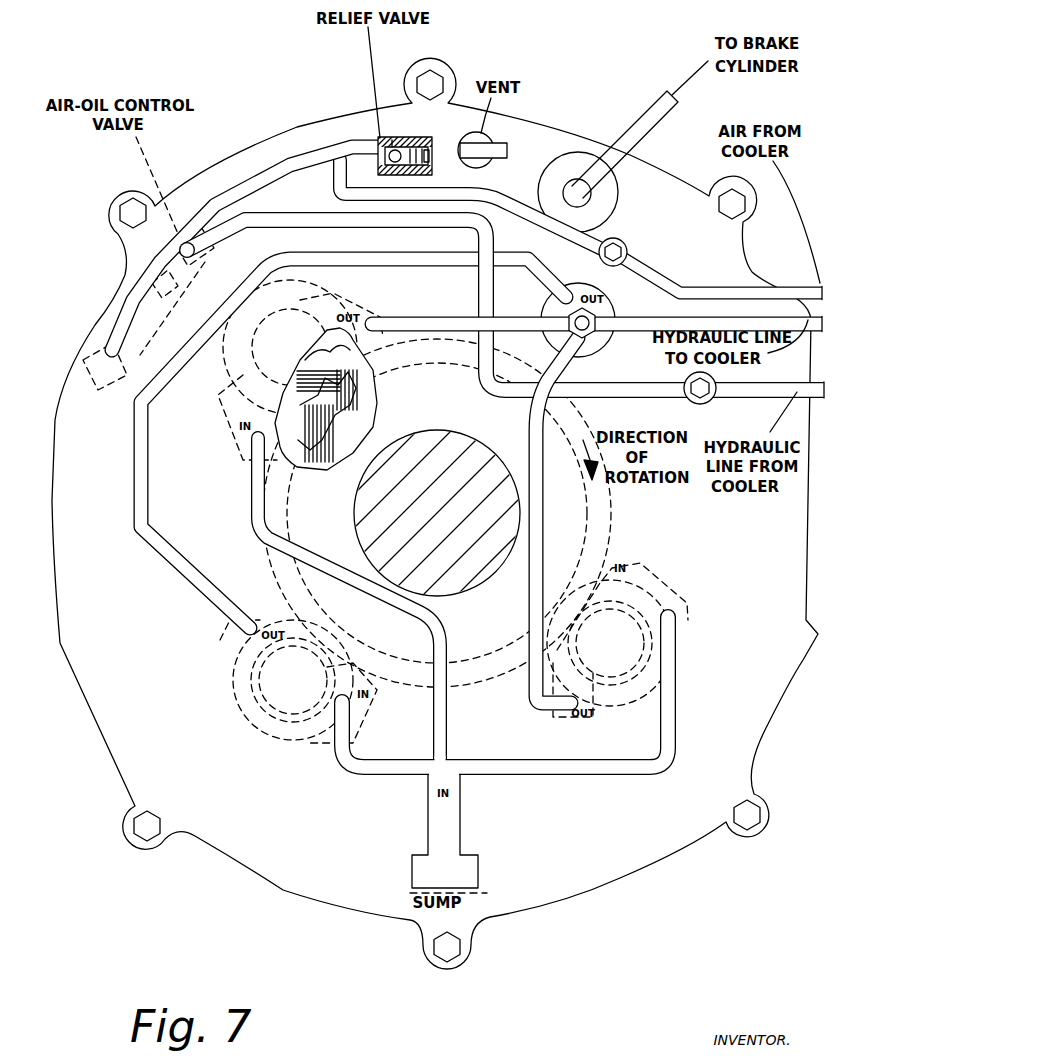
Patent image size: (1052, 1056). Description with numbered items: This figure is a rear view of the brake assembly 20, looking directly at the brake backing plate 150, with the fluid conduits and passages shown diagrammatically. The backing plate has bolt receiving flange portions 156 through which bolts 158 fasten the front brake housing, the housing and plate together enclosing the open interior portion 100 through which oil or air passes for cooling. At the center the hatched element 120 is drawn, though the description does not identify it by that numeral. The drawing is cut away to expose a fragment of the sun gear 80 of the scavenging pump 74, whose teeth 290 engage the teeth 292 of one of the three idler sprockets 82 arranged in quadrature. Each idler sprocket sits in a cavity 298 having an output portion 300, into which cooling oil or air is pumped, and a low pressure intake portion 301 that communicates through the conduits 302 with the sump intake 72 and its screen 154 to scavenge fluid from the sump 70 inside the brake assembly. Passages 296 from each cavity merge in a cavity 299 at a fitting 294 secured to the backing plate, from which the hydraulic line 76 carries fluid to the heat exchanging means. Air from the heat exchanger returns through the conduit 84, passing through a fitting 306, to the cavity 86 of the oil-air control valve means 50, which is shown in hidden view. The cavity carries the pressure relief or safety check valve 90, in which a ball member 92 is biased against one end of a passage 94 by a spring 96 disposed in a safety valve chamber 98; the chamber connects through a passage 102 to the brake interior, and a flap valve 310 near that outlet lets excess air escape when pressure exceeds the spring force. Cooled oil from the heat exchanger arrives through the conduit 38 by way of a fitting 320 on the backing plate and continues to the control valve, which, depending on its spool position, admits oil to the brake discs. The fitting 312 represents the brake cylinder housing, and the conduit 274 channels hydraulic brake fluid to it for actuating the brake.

The brake assembly 20 is at (280, 890).
The conduit 38 is at (601, 392).
The oil-air control valve means 50 is at (102, 352).
The sump 70 is at (493, 897).
The sump intake 72 is at (458, 870).
The pump 74 is at (322, 473).
The conduit 76 is at (650, 323).
The sun gear 80 is at (367, 423).
The idler sprockets 82 is at (303, 363).
The conduit 84 is at (522, 220).
The cavity 86 is at (226, 195).
The safety check valve 90 is at (382, 144).
The ball member 92 is at (381, 170).
The passage 94 is at (380, 150).
The spring 96 is at (425, 140).
The safety valve chamber 98 is at (392, 140).
The open interior portion 100 is at (565, 146).
The passage 102 is at (432, 162).
The shaft 120 is at (460, 460).
The brake backing plate 150 is at (650, 838).
The screen 154 is at (478, 884).
The bolt receiving flange portions 156 is at (108, 220).
The bolts 158 is at (128, 208).
The conduit 274 is at (640, 100).
The teeth 290 is at (340, 375).
The teeth 292 is at (368, 412).
The fitting 294 is at (598, 340).
The passages 296 is at (463, 323).
The cavity 298 is at (267, 283).
The cavity 299 is at (552, 308).
The output portion 300 is at (327, 297).
The intake portion 301 is at (235, 408).
The conduits 302 is at (390, 773).
The fitting 306 is at (620, 242).
The flap valve 310 is at (480, 163).
The fitting 312 is at (588, 183).
The fitting 320 is at (700, 404).